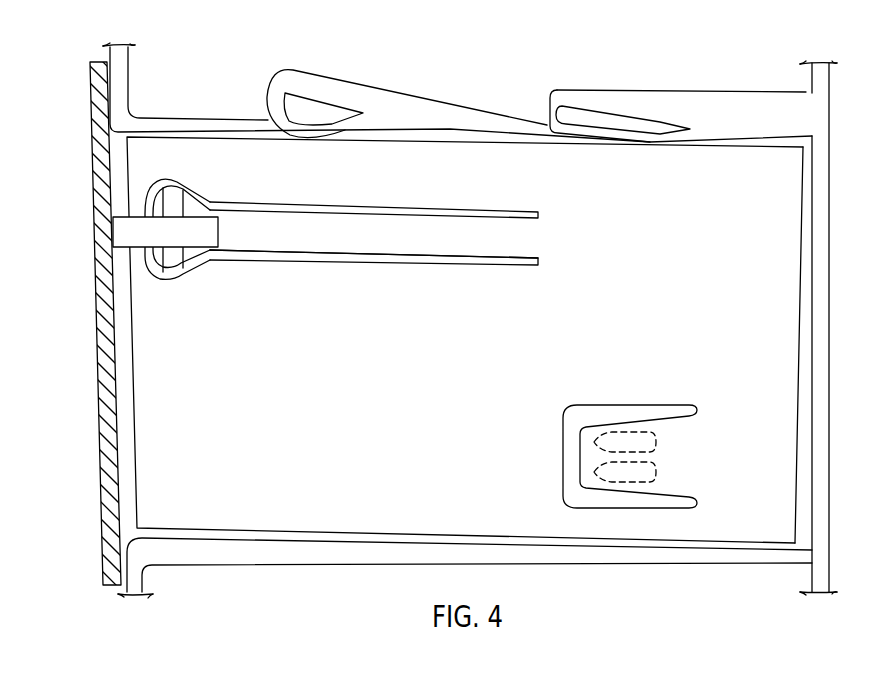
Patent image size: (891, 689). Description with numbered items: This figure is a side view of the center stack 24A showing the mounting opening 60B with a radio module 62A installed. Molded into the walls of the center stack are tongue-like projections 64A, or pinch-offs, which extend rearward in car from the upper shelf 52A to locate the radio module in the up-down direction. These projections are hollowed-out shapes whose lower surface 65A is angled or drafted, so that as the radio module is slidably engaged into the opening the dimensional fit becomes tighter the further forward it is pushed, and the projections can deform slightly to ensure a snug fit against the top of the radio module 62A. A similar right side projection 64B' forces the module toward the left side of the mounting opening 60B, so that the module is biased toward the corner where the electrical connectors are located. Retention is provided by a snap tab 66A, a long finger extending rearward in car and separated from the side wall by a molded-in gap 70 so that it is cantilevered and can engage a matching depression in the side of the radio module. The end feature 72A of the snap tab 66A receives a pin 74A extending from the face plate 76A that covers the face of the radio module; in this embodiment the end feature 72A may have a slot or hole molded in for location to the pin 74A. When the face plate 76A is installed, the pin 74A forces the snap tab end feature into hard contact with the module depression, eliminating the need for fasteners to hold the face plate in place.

The center stack 24A is at (822, 242).
The upper shelf 52A is at (365, 553).
The mounting opening 60B is at (803, 505).
The radio module 62A is at (800, 283).
The tongue-like projection 64A is at (273, 82).
The lower surface 65A is at (343, 135).
The right side projection 64B' is at (607, 456).
The snap tab 66A is at (312, 240).
The molded-in gap 70 is at (378, 258).
The end feature 72A is at (177, 263).
The pin 74A is at (128, 235).
The face plate 76A is at (103, 415).